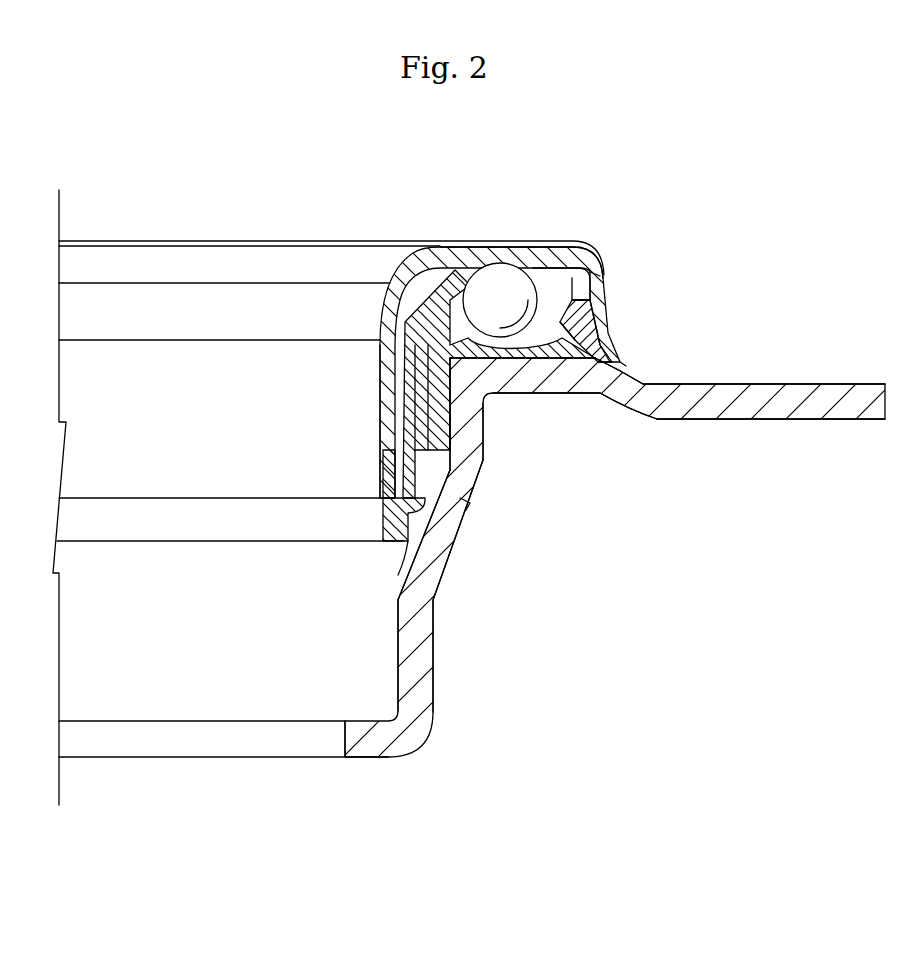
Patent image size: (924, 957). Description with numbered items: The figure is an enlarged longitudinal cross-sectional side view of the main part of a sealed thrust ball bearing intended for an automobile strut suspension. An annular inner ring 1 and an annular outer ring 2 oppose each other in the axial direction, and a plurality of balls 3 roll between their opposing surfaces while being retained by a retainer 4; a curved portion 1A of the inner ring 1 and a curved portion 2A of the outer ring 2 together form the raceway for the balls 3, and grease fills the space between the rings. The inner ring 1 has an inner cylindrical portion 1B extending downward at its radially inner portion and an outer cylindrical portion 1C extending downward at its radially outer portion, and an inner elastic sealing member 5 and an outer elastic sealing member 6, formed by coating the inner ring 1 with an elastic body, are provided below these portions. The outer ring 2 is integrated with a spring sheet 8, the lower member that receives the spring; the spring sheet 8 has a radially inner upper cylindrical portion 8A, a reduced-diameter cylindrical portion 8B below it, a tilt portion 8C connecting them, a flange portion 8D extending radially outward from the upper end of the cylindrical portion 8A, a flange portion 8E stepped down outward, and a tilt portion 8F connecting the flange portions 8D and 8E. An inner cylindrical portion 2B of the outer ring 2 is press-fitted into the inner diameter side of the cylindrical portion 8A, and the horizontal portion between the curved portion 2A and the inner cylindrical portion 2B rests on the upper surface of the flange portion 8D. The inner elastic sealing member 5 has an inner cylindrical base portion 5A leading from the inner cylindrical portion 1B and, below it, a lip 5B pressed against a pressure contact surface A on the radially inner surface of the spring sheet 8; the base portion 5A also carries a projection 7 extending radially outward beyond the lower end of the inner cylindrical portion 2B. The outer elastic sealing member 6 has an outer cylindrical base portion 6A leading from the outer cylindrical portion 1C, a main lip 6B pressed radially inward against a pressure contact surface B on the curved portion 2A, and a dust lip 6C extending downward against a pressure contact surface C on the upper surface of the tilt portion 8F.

The inner ring 1 is at (491, 239).
The curved portion 1A is at (473, 262).
The inner cylindrical portion 1B is at (388, 310).
The outer cylindrical portion 1C is at (600, 262).
The outer ring 2 is at (436, 338).
The curved portion 2A is at (545, 352).
The inner cylindrical portion 2B is at (442, 418).
The balls 3 is at (503, 285).
The retainer 4 is at (551, 262).
The inner elastic sealing member 5 is at (381, 482).
The inner cylindrical base portion 5A is at (397, 463).
The lip 5B is at (397, 513).
The outer elastic sealing member 6 is at (619, 329).
The outer cylindrical base portion 6A is at (600, 296).
The main lip 6B is at (568, 342).
The dust lip 6C is at (620, 345).
The projection 7 is at (468, 500).
The spring sheet 8 is at (775, 424).
The cylindrical portion 8A is at (470, 453).
The cylindrical portion 8B is at (430, 652).
The tilt portion 8C is at (450, 545).
The flange portion 8D is at (540, 383).
The flange portion 8E is at (837, 390).
The tilt portion 8F is at (640, 382).
The pressure contact surface A is at (392, 560).
The pressure contact surface B is at (592, 270).
The pressure contact surface C is at (626, 356).